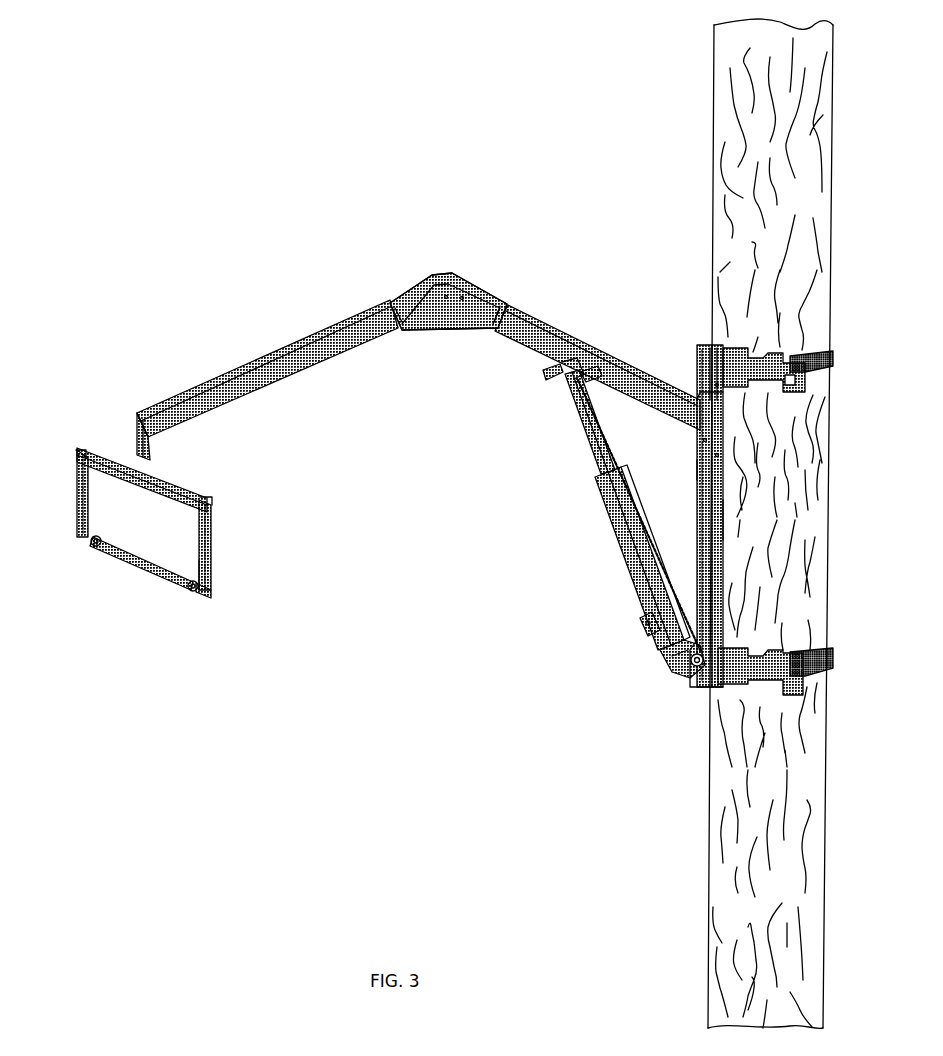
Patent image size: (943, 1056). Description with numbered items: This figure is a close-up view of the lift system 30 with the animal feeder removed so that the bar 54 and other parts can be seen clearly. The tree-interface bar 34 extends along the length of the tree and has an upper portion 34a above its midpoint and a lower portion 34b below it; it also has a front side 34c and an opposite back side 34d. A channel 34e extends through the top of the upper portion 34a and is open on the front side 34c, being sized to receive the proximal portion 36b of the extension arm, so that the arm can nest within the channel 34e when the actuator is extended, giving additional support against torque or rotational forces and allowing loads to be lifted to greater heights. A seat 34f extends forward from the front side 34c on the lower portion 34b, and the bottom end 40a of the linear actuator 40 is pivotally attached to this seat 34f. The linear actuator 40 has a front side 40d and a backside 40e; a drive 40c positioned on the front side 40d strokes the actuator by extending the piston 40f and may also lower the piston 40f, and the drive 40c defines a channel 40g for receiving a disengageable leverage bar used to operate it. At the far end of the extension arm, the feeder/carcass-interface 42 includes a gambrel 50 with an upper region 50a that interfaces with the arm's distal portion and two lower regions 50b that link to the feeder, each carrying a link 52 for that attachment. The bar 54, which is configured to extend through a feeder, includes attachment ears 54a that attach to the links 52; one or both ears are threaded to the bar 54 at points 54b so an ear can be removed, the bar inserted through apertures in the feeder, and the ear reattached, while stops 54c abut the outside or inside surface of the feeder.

The system 30 is at (460, 252).
The tree-interface bar 34 is at (713, 490).
The upper portion 34a is at (693, 405).
The lower portion 34b is at (730, 640).
The front side 34c is at (694, 468).
The back side 34d is at (728, 517).
The channel 34e is at (703, 370).
The seat 34f is at (702, 700).
The proximal portion 36b is at (531, 330).
The linear actuator 40 is at (628, 525).
The bottom end 40a is at (690, 657).
The drive 40c is at (650, 625).
The front side 40d is at (638, 570).
The backside 40e is at (625, 482).
The piston 40f is at (582, 420).
The channel 40g is at (662, 645).
The feeder/carcass-interface 42 is at (104, 412).
The gambrel 50 is at (218, 455).
The upper region 50a is at (150, 455).
The lower regions 50b is at (80, 448).
The link 52 is at (78, 507).
The bar 54 is at (143, 567).
The attachment ears 54a is at (212, 590).
The points 54b is at (96, 548).
The stops 54c is at (97, 534).